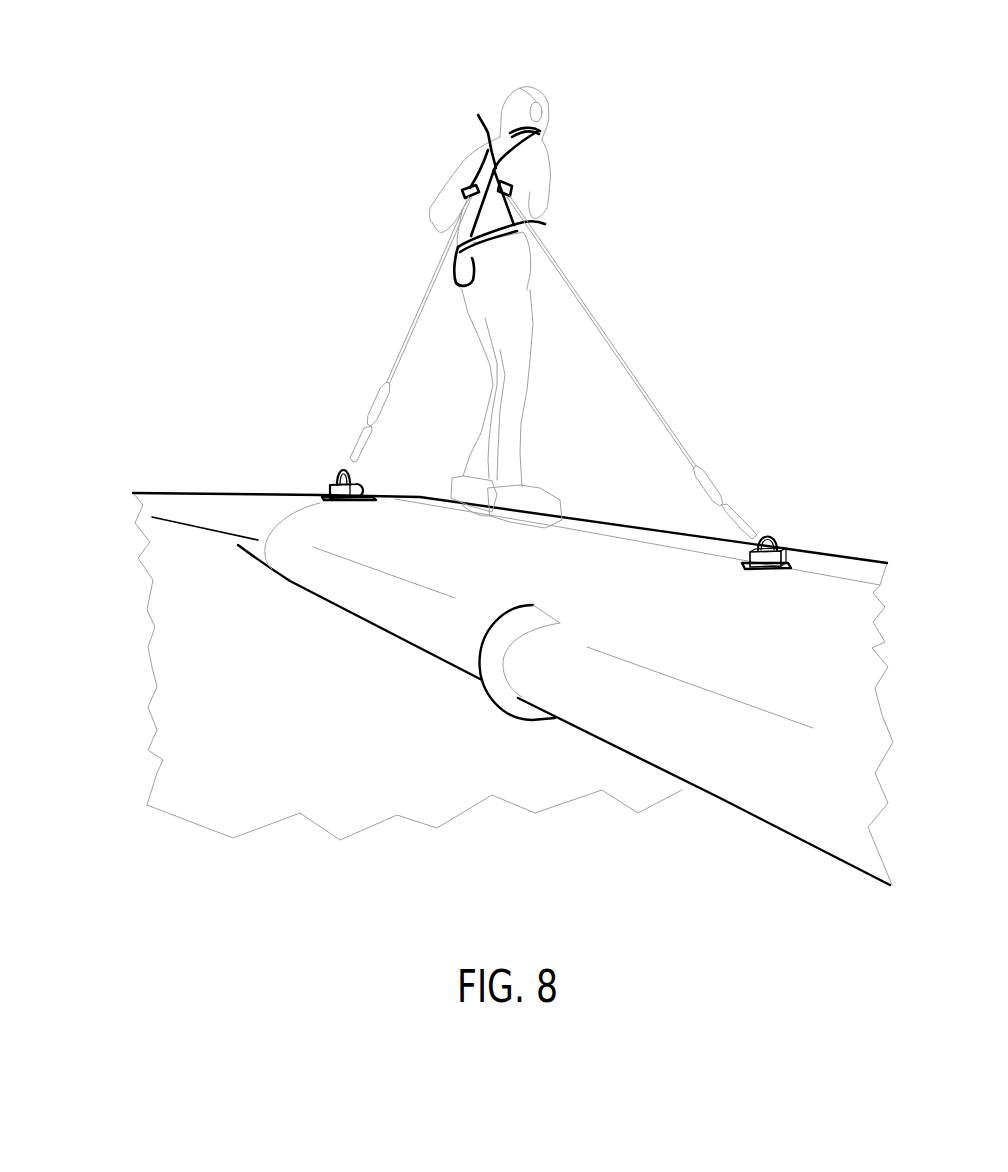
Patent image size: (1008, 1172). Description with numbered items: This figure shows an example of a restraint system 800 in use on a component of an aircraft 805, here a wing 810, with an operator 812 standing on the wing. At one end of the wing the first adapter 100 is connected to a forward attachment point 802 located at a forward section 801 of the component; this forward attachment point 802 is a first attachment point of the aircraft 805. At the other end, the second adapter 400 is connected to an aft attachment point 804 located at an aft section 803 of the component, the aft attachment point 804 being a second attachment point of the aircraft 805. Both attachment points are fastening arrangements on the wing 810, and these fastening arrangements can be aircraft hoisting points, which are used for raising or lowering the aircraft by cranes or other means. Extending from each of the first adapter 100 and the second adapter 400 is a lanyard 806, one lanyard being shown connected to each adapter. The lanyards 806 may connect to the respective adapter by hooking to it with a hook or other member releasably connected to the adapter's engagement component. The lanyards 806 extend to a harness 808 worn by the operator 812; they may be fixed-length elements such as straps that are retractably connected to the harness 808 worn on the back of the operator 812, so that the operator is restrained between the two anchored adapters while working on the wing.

The restraint system 800 is at (220, 86).
The operator 812 is at (509, 76).
The harness 808 is at (483, 128).
The lanyards 806 is at (612, 340).
The aircraft 805 is at (130, 416).
The second adapter 400 is at (327, 462).
The aft attachment point 804 is at (325, 493).
The wing 810 is at (628, 523).
The first adapter 100 is at (786, 529).
The forward attachment point 802 is at (780, 556).
The aft section 803 is at (268, 595).
The forward section 801 is at (770, 851).